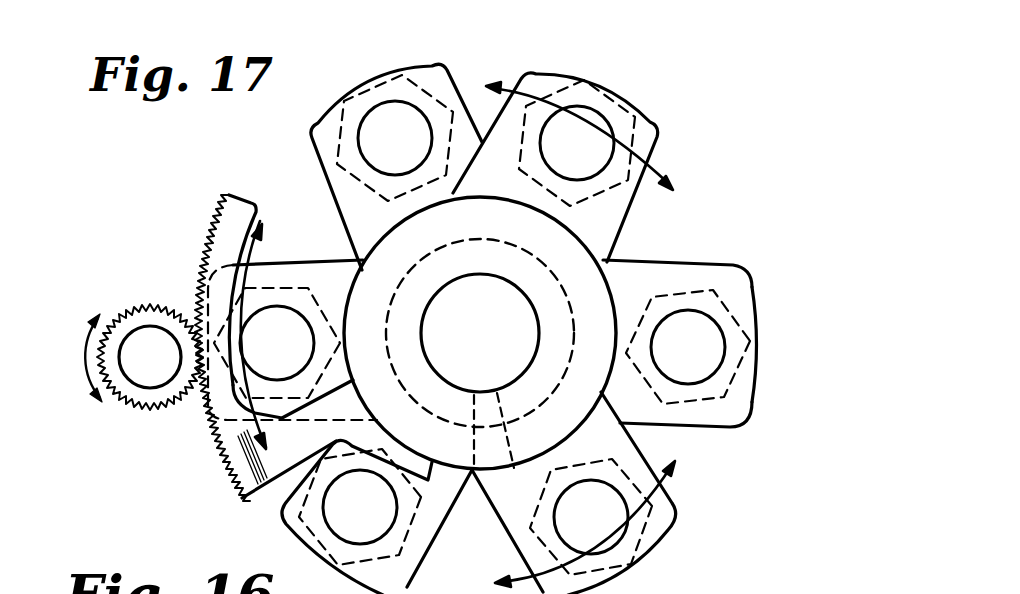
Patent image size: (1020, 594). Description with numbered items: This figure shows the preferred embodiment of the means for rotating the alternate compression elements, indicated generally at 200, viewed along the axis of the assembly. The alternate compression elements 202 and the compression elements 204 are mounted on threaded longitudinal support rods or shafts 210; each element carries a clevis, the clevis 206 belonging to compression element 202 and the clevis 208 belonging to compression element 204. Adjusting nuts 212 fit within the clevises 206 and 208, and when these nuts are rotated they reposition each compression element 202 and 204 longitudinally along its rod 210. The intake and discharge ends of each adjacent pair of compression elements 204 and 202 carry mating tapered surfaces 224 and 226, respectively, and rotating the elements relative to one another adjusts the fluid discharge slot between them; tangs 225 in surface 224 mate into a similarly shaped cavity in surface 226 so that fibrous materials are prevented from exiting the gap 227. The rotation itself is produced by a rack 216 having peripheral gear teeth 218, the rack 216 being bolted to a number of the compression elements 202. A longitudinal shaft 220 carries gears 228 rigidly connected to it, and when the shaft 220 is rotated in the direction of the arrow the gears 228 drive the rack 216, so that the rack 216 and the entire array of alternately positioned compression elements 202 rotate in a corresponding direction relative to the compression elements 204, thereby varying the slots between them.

The means for rotating the alternate compression elements 200 is at (735, 211).
The alternate compression element 202 is at (649, 457).
The compression element 204 is at (757, 372).
The clevis 206 is at (448, 70).
The clevis 208 is at (516, 321).
The threaded longitudinal support rod 210 is at (700, 345).
The adjusting nut 212 is at (197, 403).
The rack 216 is at (268, 478).
The peripheral gear teeth 218 is at (210, 437).
The longitudinal shaft 220 is at (138, 367).
The tapered surface 224 is at (552, 358).
The tang 225 is at (455, 400).
The tapered surface 226 is at (488, 432).
The gap 227 is at (545, 424).
The gear 228 is at (120, 317).